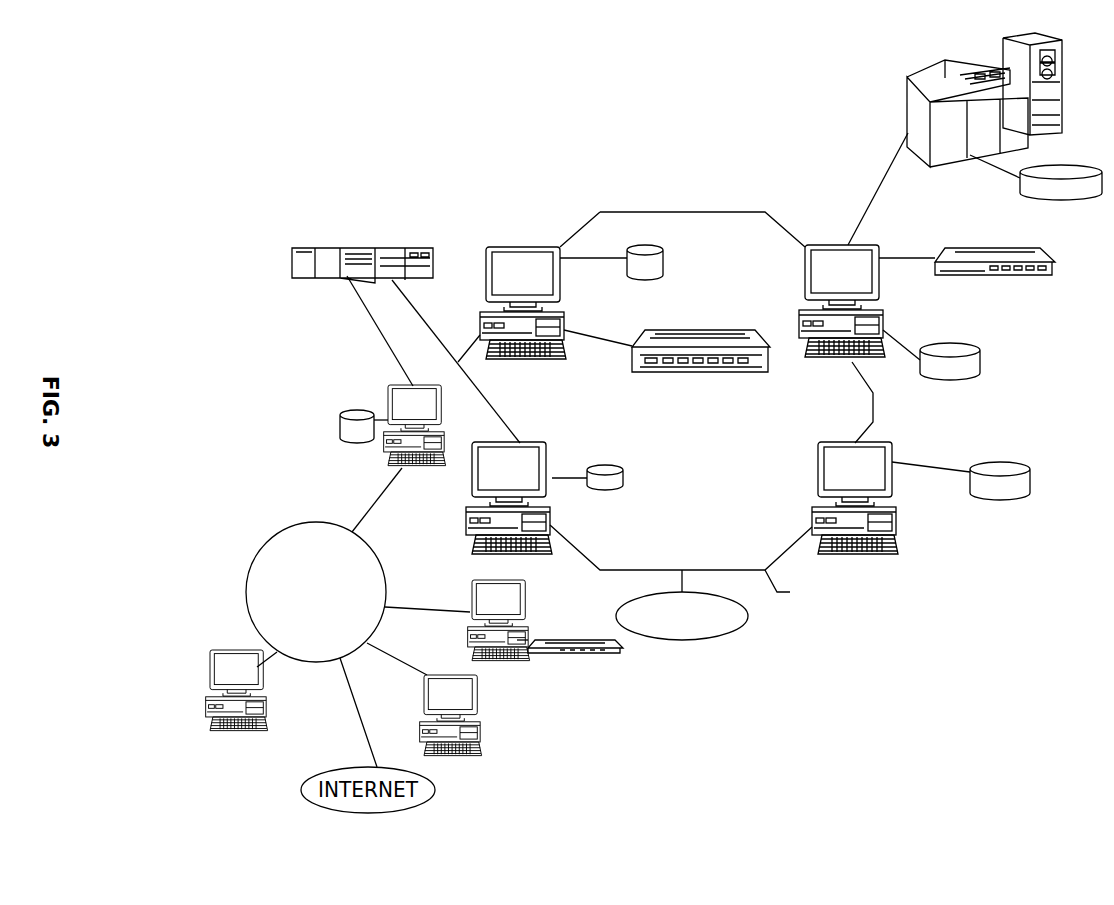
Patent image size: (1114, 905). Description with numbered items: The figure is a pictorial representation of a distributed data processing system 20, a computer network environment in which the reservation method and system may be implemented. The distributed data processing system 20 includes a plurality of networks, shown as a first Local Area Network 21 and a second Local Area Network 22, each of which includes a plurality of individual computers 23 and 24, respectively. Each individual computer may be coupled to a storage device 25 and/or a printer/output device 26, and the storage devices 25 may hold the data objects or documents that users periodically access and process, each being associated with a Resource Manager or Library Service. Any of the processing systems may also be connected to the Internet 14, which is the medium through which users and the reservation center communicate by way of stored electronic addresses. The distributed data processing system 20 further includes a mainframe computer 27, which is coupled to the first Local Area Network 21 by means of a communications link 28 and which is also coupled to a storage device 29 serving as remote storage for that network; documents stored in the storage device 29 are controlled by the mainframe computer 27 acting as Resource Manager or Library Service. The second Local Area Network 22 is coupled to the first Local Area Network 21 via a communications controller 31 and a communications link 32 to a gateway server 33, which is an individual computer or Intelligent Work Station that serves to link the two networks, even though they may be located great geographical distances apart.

The Internet 14 is at (740, 627).
The distributed data processing system 20 is at (682, 212).
The Local Area Network (LAN) 21 is at (792, 587).
The Local Area Network (LAN) 22 is at (377, 558).
The individual computers 23 is at (510, 246).
The individual computers 24 is at (517, 590).
The storage device 25 is at (663, 248).
The printer/output device 26 is at (703, 330).
The mainframe computer 27 is at (948, 75).
The communications link 28 is at (422, 317).
The storage device 29 is at (1053, 163).
The communications controller 31 is at (430, 250).
The communications link 32 is at (370, 318).
The gateway server 33 is at (438, 413).